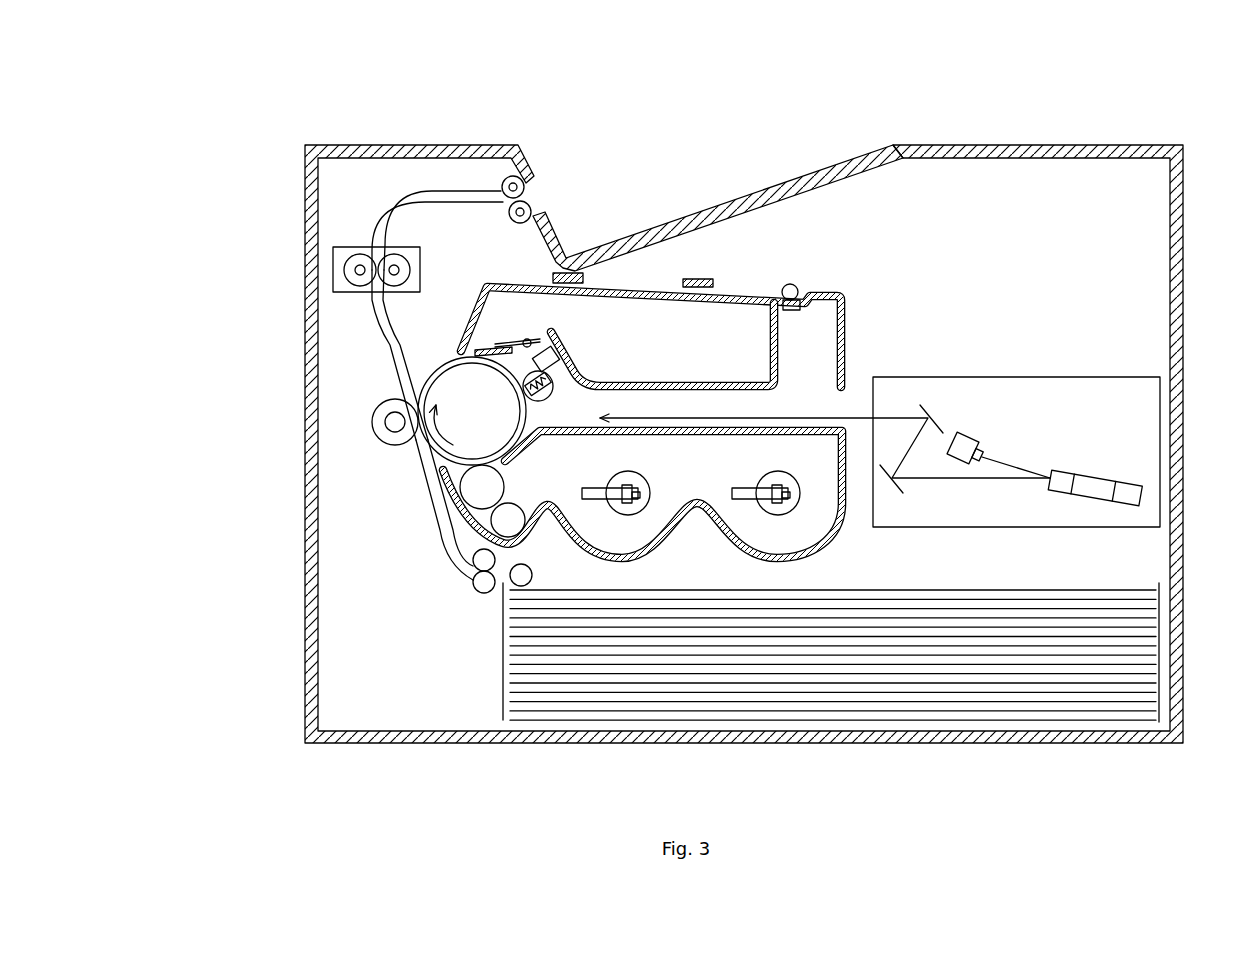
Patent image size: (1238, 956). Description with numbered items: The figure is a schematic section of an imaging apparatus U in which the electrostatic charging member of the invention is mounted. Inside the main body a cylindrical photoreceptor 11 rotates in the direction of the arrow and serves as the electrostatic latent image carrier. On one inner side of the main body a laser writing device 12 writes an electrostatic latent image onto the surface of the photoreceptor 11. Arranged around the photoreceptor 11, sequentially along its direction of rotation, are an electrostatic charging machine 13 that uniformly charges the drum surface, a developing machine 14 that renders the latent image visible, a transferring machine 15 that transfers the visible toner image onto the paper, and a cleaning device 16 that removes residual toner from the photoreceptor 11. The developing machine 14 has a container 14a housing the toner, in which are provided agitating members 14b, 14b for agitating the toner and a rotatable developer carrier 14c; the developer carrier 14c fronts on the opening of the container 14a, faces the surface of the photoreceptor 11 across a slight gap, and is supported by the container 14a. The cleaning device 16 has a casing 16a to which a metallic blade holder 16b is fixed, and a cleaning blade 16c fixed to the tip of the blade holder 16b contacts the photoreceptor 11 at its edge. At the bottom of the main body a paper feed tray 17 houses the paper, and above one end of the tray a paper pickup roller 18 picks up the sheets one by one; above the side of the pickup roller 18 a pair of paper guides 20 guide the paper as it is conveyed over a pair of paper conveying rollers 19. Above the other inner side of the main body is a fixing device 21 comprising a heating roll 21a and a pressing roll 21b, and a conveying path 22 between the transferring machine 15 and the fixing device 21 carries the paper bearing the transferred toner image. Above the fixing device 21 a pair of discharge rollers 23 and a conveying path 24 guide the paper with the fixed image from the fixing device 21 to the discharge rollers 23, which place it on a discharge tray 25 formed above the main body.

The imaging apparatus U is at (987, 125).
The photoreceptor 11 is at (497, 445).
The laser writing device 12 is at (1030, 377).
The electrostatic charging machine 13 is at (553, 400).
The developing machine 14 is at (827, 552).
The container 14a is at (683, 527).
The agitating members 14b is at (602, 487).
The developer carrier 14c is at (467, 497).
The transferring machine 15 is at (372, 422).
The cleaning device 16 is at (750, 275).
The casing 16a is at (515, 280).
The blade holder 16b is at (555, 335).
The cleaning blade 16c is at (497, 362).
The paper feed tray 17 is at (485, 683).
The paper pickup roller 18 is at (533, 577).
The paper conveying rollers 19 is at (482, 600).
The paper guides 20 is at (437, 515).
The fixing device 21 is at (301, 235).
The heating roll 21a is at (392, 256).
The pressing roll 21b is at (355, 265).
The conveying path 22 is at (386, 344).
The discharge rollers 23 is at (540, 192).
The conveying path 24 is at (415, 198).
The discharge tray 25 is at (758, 191).